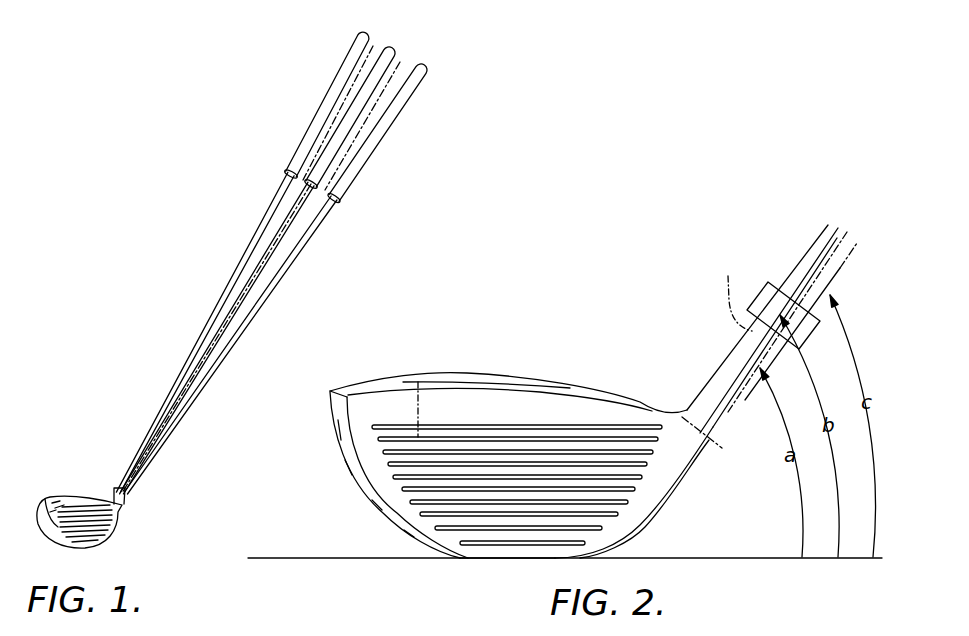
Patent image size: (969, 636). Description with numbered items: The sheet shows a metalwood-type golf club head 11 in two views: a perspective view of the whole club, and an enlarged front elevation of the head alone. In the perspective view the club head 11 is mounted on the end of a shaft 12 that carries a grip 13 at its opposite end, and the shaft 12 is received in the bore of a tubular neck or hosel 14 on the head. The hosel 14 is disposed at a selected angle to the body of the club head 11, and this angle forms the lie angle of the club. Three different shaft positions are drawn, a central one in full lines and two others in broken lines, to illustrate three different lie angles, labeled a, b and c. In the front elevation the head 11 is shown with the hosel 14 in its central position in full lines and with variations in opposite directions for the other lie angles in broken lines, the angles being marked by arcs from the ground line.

In FIG. 1, the golf club head 11 is at (139, 522).
In FIG. 2, the golf club head 11 is at (722, 505).
In FIG. 1, the shaft 12 is at (273, 247).
In FIG. 1, the grip 13 is at (370, 39).
In FIG. 1, the hosel 14 is at (117, 498).
In FIG. 2, the hosel 14 is at (812, 320).